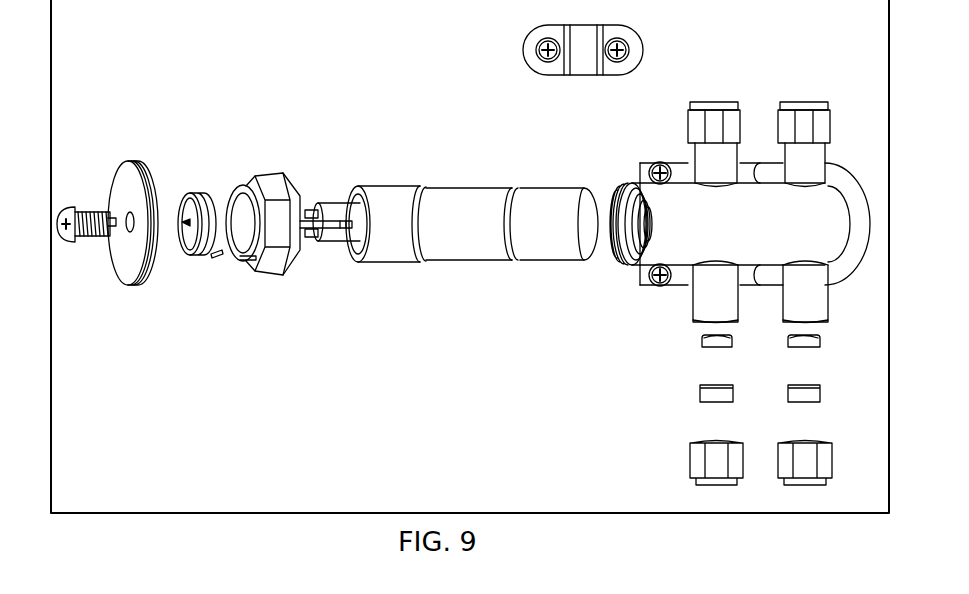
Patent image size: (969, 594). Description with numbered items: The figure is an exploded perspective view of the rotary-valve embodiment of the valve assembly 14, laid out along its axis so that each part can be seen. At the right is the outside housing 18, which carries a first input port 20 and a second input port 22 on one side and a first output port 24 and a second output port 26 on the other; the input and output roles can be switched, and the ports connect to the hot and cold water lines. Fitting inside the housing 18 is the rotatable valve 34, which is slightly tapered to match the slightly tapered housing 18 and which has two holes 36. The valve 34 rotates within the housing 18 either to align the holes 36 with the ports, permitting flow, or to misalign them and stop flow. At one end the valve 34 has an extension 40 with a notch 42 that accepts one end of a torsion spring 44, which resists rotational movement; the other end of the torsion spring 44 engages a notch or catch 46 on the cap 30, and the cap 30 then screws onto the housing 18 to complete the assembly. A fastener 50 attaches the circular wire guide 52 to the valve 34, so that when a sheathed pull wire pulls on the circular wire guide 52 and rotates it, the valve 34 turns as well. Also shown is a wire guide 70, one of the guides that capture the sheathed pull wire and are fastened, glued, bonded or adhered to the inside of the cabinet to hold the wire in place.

The valve assembly 14 is at (370, 97).
The housing 18 is at (825, 222).
The first input port 20 is at (700, 300).
The second input port 22 is at (808, 308).
The first output port 24 is at (822, 157).
The second output port 26 is at (698, 153).
The cap 30 is at (273, 177).
The rotatable valve 34 is at (472, 210).
The holes 36 is at (442, 192).
The extension 40 is at (335, 238).
The notch 42 is at (328, 223).
The torsion spring 44 is at (192, 197).
The notch or catch 46 is at (255, 260).
The fastener 50 is at (83, 212).
The circular wire guide 52 is at (130, 178).
The wire guide 70 is at (588, 33).